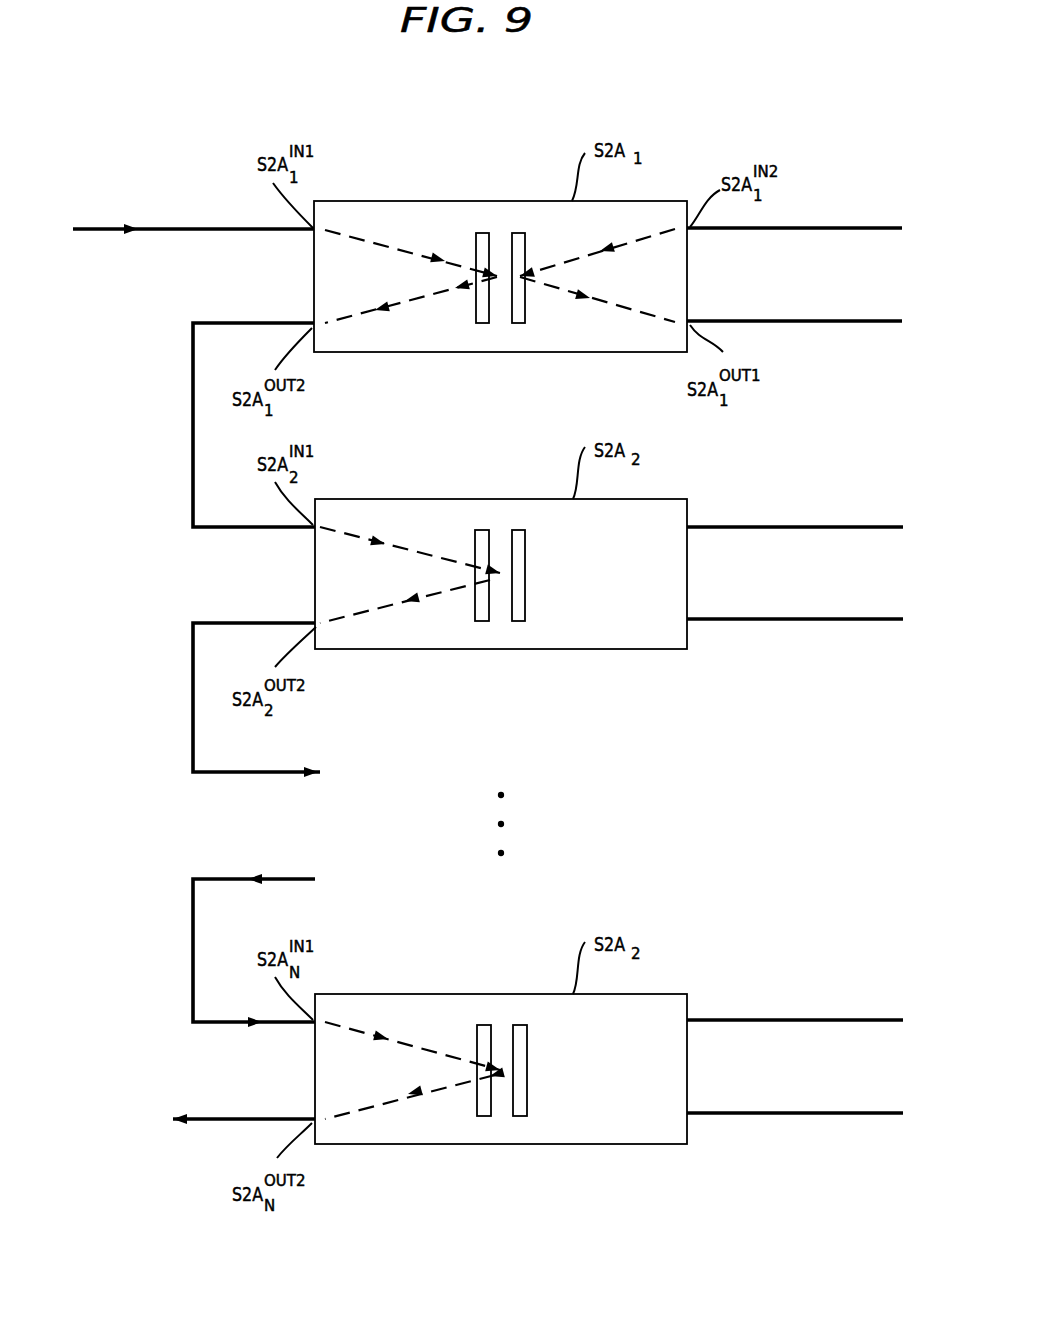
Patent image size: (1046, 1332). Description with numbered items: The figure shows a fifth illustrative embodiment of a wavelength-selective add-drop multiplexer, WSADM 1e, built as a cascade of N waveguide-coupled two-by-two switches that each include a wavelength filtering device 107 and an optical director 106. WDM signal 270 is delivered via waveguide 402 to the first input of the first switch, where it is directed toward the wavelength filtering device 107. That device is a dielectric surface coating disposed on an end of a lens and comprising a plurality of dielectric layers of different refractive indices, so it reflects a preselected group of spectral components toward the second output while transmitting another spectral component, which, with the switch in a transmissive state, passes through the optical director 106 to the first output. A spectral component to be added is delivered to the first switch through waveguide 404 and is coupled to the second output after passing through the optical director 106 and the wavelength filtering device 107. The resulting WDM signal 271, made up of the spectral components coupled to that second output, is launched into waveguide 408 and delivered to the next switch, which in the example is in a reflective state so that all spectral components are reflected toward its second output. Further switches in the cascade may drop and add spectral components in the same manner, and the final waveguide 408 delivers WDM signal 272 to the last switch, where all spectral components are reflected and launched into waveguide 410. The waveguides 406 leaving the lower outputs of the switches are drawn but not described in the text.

The wavelength-selective add-drop multiplexer 1e is at (255, 96).
The WDM signal 270 is at (133, 225).
The WDM signal 271 is at (427, 293).
The WDM signal 272 is at (250, 877).
The waveguide 402 is at (193, 195).
The waveguide 404 is at (803, 228).
The lower output optical fiber 406 is at (807, 323).
The waveguide 408 is at (191, 900).
The waveguide 410 is at (230, 1152).
The optical director 106 is at (520, 1025).
The wavelength filtering device 107 is at (482, 233).